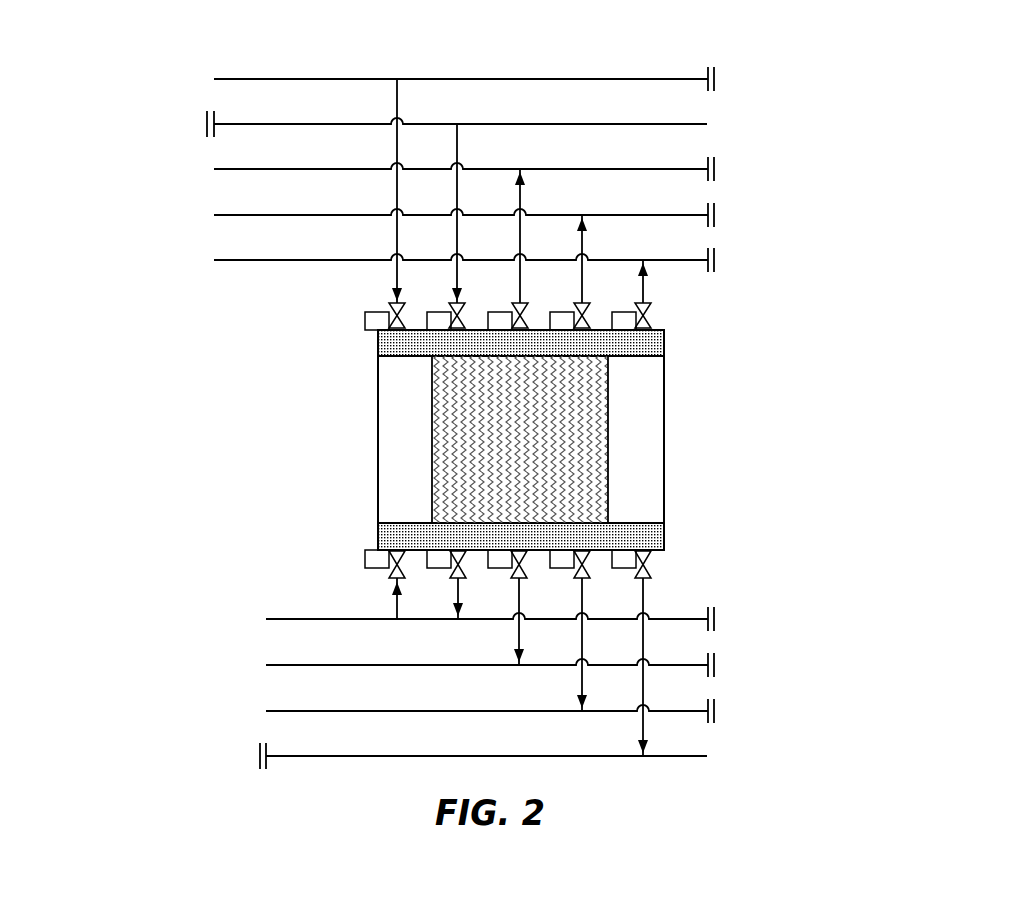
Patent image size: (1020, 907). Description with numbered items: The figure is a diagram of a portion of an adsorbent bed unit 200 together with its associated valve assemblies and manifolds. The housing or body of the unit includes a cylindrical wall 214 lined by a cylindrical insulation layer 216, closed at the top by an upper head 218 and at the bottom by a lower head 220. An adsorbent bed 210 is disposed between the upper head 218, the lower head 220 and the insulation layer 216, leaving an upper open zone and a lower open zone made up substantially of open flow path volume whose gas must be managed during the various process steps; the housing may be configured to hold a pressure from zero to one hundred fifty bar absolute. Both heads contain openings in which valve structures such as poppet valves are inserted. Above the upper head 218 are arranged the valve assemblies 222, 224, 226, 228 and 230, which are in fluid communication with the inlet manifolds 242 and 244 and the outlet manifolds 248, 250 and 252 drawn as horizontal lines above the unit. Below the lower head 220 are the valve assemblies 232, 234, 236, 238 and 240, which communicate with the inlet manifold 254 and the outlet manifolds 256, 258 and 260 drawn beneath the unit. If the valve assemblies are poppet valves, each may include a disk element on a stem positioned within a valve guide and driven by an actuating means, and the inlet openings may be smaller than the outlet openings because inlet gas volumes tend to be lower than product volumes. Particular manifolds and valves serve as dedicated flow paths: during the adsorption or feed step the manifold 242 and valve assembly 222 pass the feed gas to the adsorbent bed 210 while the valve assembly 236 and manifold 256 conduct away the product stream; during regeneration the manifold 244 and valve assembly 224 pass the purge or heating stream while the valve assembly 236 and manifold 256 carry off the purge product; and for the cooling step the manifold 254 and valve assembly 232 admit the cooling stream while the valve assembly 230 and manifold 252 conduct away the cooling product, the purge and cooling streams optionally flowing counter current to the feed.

The adsorbent bed unit 200 is at (186, 39).
The adsorbent bed 210 is at (447, 442).
The cylindrical wall 214 is at (664, 453).
The cylindrical insulation layer 216 is at (392, 404).
The upper head 218 is at (664, 343).
The lower head 220 is at (694, 522).
The valve assembly 222 is at (404, 313).
The valve assembly 224 is at (464, 313).
The valve assembly 226 is at (527, 313).
The valve assembly 228 is at (589, 313).
The valve assembly 230 is at (650, 313).
The valve assembly 232 is at (404, 567).
The valve assembly 234 is at (465, 567).
The valve assembly 236 is at (526, 567).
The valve assembly 238 is at (589, 567).
The valve assembly 240 is at (650, 567).
The inlet manifold 242 is at (310, 78).
The inlet manifold 244 is at (310, 123).
The outlet manifold 248 is at (310, 168).
The outlet manifold 250 is at (310, 214).
The outlet manifold 252 is at (310, 259).
The inlet manifold 254 is at (348, 618).
The outlet manifold 256 is at (348, 664).
The outlet manifold 258 is at (348, 710).
The outlet manifold 260 is at (348, 755).